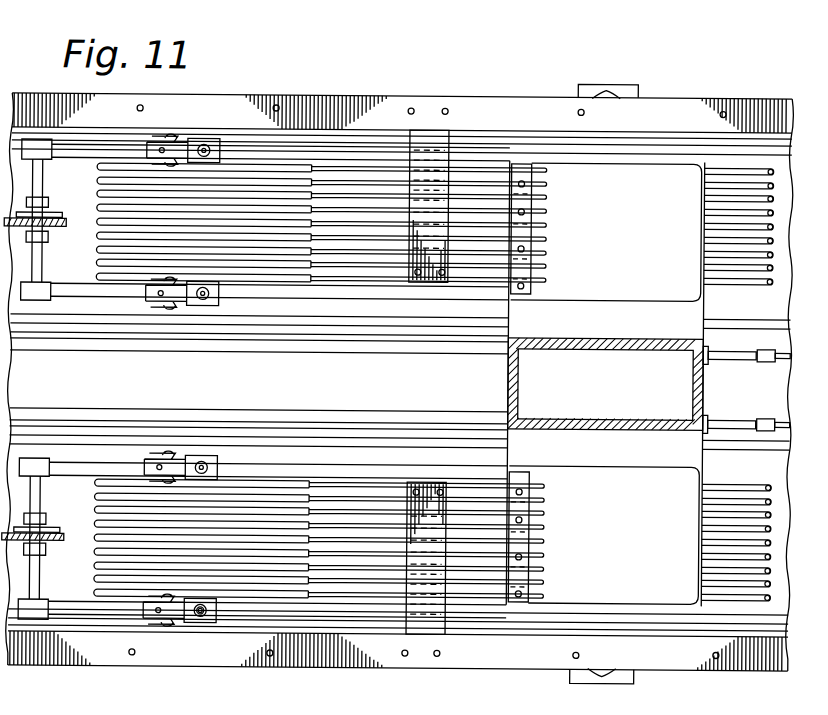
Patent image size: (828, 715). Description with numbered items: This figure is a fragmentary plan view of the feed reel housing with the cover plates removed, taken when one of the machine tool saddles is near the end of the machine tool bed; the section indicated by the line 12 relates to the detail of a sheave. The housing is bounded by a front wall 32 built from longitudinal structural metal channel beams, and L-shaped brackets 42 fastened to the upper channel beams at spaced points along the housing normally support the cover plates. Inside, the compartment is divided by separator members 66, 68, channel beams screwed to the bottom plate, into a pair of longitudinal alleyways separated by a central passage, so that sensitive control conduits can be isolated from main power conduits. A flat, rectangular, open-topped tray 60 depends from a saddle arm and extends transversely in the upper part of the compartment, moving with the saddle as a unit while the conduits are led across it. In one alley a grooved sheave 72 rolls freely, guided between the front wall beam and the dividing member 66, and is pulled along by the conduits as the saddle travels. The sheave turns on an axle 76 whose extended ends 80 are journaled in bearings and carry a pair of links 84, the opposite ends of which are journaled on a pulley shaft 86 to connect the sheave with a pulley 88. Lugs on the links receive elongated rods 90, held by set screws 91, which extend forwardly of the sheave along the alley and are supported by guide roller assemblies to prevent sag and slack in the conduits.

The section line 12- 12 is at (226, 385).
The front wall 32 is at (316, 660).
The L-shaped bracket 42 is at (440, 143).
The tray 60 is at (508, 395).
The separator member 66 is at (325, 422).
The separator member 68 is at (240, 346).
The sheave 72 is at (92, 558).
The axle 76 is at (181, 624).
The axle end 80 is at (206, 140).
The link 84 is at (378, 108).
The pulley shaft 86 is at (40, 200).
The pulley 88 is at (55, 233).
The elongated rod 90 is at (368, 468).
The set screw 91 is at (203, 618).